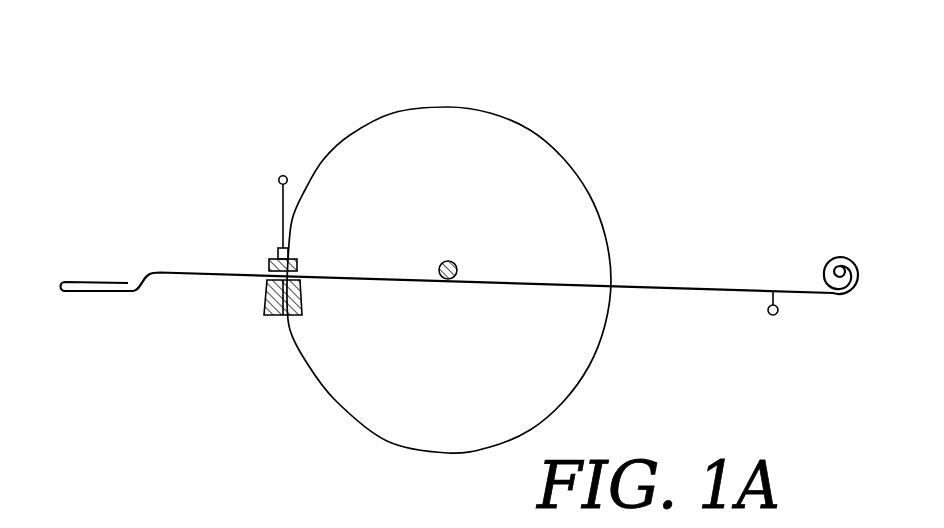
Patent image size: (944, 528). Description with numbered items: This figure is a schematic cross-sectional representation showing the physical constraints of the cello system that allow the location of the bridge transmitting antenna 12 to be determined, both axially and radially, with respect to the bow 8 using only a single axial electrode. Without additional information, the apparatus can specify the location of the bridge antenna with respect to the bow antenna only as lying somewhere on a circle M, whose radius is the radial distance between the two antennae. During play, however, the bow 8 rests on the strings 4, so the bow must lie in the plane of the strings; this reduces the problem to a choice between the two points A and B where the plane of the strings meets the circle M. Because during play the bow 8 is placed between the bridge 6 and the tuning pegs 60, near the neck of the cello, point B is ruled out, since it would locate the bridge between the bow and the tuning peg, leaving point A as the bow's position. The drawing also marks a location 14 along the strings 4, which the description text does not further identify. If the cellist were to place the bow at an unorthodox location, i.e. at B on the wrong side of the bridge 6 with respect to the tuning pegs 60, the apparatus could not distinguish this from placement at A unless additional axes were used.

The strings 4 is at (672, 290).
The bridge 6 is at (298, 268).
The bow 8 is at (458, 268).
The bridge transmitting antenna 12 is at (282, 200).
The point on strip 14 is at (446, 261).
The tuning pegs 60 is at (778, 313).
The circle M is at (546, 143).
The point A is at (268, 280).
The point B is at (621, 276).